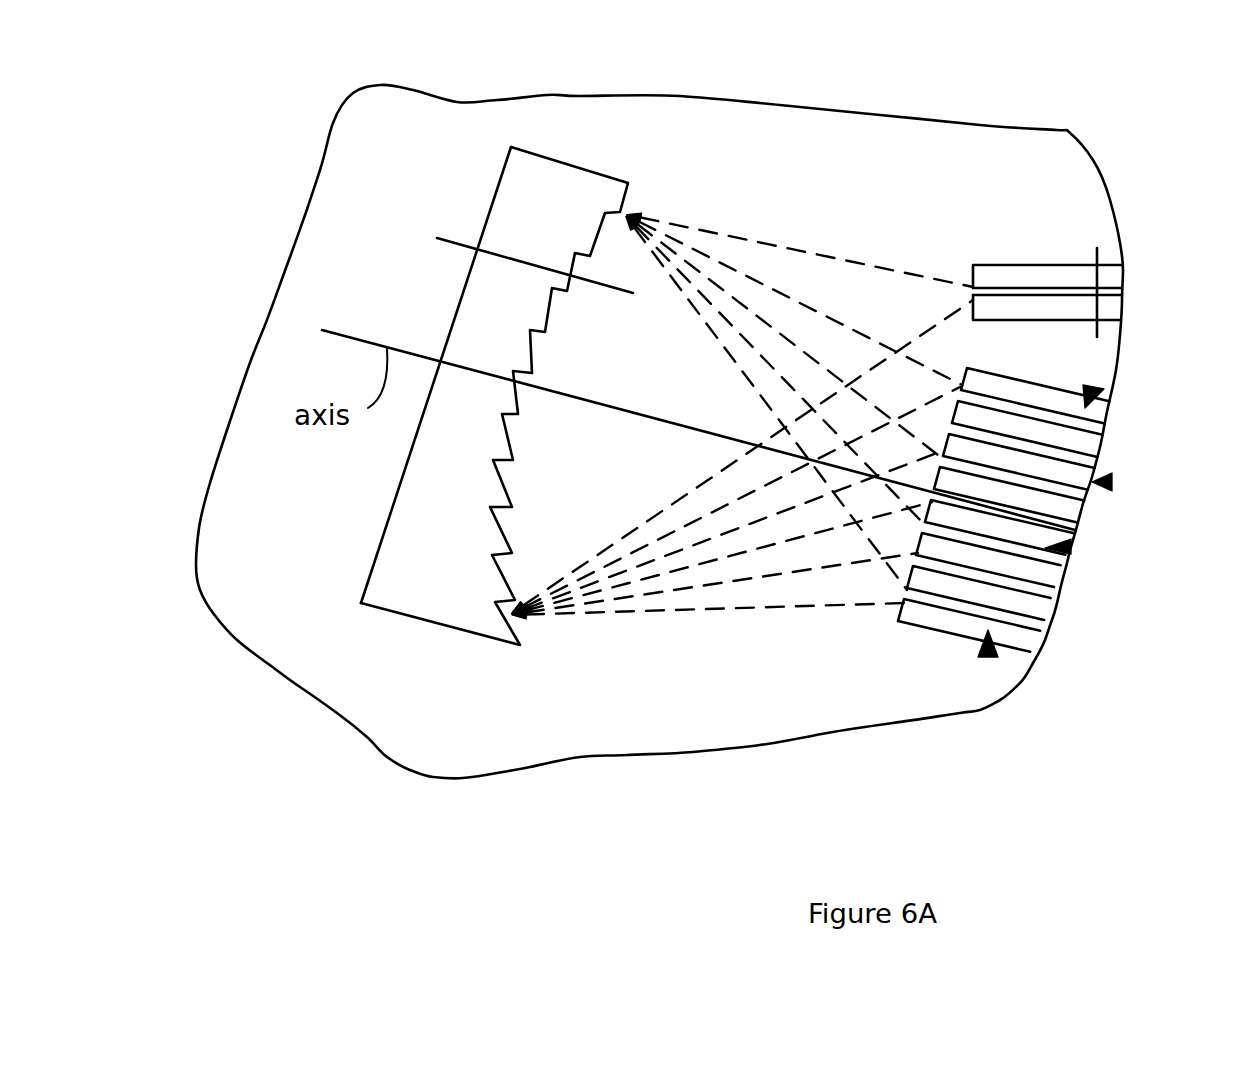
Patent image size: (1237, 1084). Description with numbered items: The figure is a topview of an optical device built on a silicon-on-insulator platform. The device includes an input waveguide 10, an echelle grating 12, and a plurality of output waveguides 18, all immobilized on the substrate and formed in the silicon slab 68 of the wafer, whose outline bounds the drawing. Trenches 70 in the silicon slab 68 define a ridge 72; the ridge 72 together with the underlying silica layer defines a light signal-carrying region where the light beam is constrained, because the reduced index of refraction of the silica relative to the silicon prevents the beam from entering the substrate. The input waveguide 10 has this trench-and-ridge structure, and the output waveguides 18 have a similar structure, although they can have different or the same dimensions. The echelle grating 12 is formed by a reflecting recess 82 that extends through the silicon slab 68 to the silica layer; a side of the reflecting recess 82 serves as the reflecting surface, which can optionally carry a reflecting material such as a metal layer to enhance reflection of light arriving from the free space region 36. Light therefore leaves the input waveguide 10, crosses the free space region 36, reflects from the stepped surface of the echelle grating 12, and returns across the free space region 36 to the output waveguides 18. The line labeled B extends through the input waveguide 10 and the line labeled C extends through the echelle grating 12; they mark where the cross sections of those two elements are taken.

The input waveguide 10 is at (1038, 270).
The echelle grating 12 is at (501, 532).
The output waveguides 18 is at (1093, 390).
The free space region 36 is at (678, 395).
The silicon slab 68 is at (404, 755).
The trenches 70 is at (978, 270).
The ridge 72 is at (1053, 297).
The reflecting recess 82 is at (373, 563).
The line B is at (1095, 250).
The line C is at (452, 240).